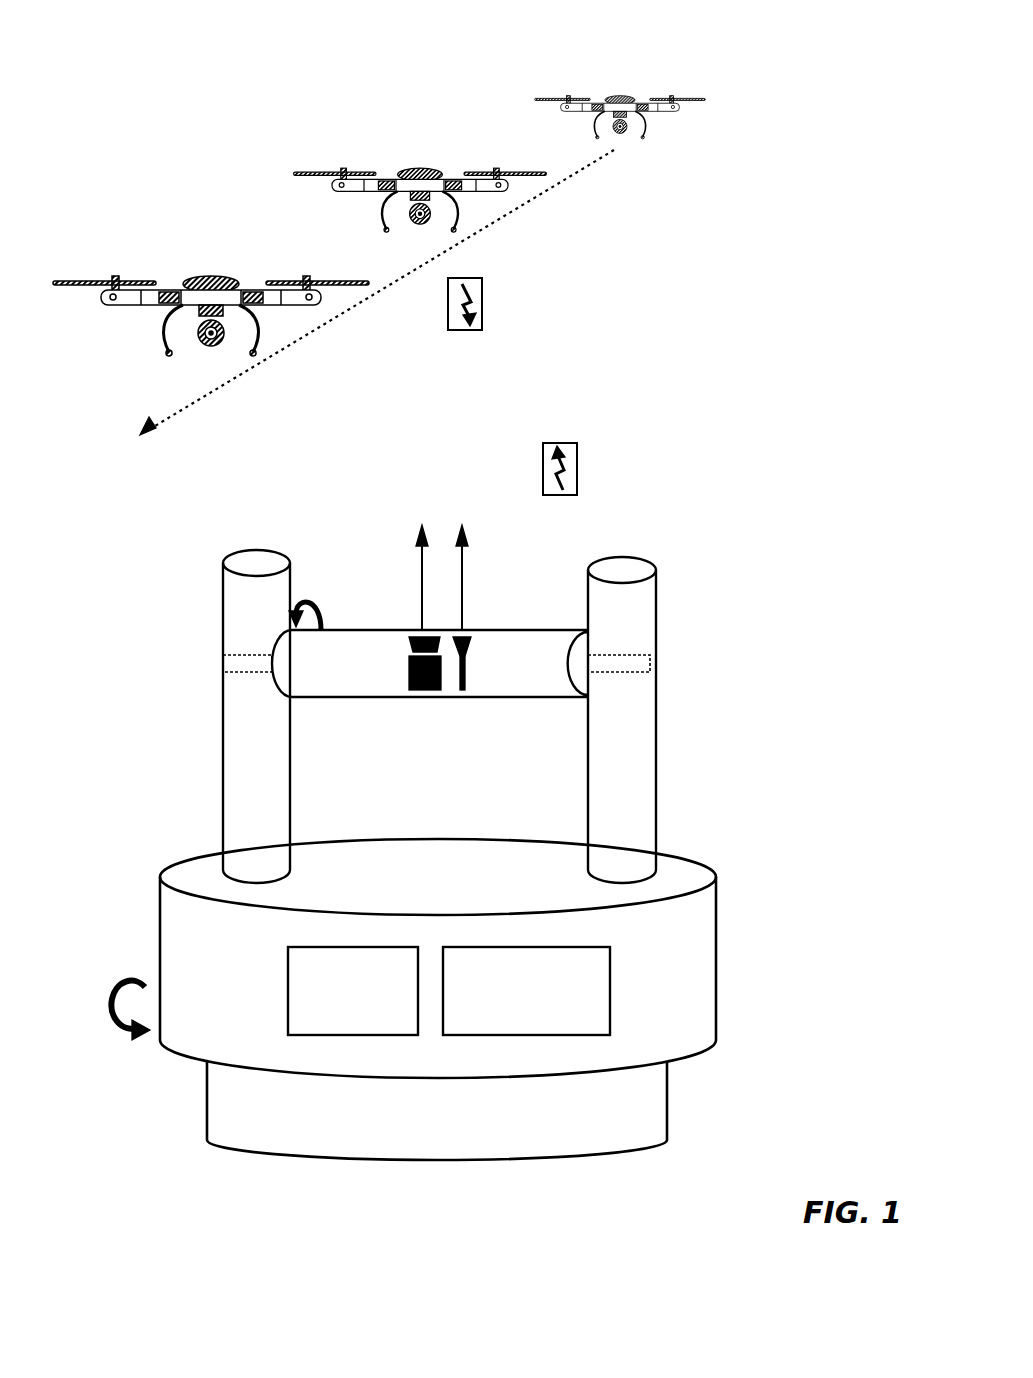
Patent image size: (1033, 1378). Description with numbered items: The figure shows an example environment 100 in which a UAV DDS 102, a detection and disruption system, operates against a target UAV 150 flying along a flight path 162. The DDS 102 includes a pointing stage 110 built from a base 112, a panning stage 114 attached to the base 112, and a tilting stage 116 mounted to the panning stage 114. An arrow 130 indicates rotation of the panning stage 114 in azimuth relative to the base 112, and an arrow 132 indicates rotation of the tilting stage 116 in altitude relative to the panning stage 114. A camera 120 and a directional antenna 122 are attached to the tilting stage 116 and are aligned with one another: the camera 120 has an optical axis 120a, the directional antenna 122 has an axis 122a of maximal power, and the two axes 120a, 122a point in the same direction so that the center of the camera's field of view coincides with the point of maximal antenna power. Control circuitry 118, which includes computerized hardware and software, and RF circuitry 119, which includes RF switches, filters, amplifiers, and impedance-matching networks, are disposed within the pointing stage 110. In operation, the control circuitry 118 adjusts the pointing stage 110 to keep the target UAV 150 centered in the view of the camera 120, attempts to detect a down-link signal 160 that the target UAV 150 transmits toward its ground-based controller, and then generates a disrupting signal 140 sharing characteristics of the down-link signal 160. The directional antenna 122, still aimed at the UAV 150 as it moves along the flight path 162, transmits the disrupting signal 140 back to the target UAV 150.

The environment 100 is at (824, 78).
The UAV DDS 102 is at (822, 486).
The pointing stage 110 is at (741, 817).
The base 112 is at (440, 1131).
The panning stage 114 is at (452, 902).
The tilting stage 116 is at (326, 685).
The control circuitry 118 is at (336, 1026).
The RF circuitry 119 is at (510, 1026).
The camera 120 is at (415, 688).
The optical axis 120a is at (420, 580).
The directional antenna 122 is at (457, 690).
The axis of maximal power 122a is at (464, 578).
The direction of rotation of the panning stage 130 is at (125, 987).
The direction of rotation of the tilting stage 132 is at (298, 620).
The disrupting signal 140 is at (577, 467).
The target UAV 150 is at (644, 78).
The down-link signal 160 is at (482, 302).
The flight path 162 is at (167, 415).